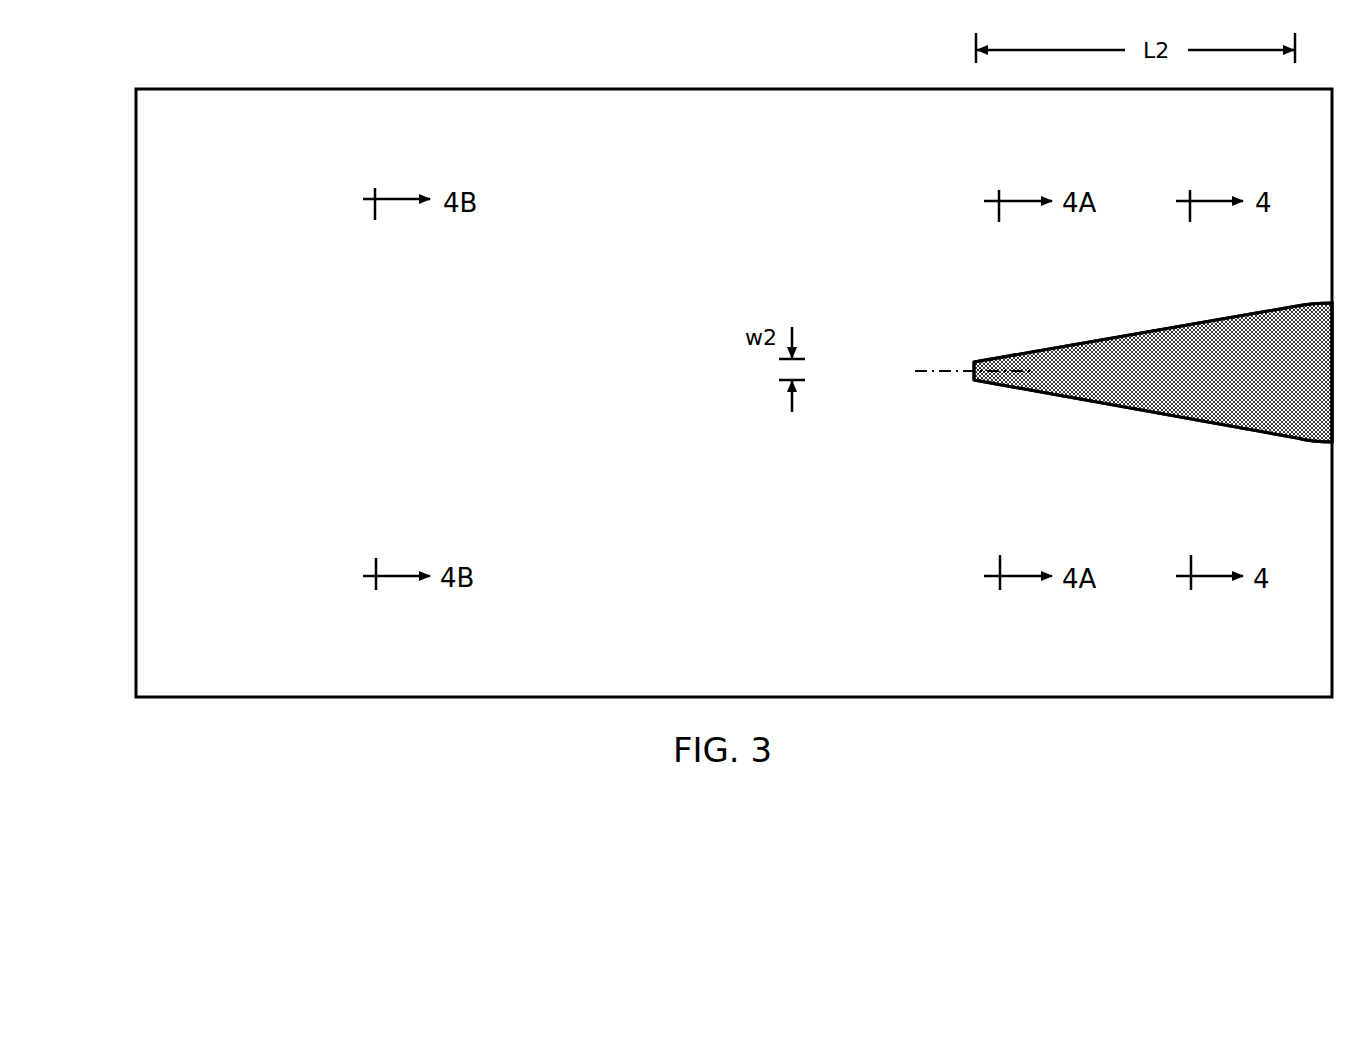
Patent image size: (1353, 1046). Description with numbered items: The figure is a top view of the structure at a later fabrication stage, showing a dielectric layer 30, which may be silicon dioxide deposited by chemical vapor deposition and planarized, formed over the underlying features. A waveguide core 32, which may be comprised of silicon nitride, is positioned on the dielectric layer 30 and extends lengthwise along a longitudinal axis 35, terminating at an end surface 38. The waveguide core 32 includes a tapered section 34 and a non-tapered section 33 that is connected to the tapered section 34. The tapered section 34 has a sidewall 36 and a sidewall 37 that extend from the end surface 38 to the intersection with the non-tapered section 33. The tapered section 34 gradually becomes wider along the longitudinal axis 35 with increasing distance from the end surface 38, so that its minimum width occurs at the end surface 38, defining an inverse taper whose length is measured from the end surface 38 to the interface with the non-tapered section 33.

The dielectric layer 30 is at (208, 627).
The waveguide core 32 is at (1060, 407).
The non-tapered section 33 is at (1313, 355).
The tapered section 34 is at (1115, 360).
The longitudinal axis 35 is at (950, 370).
The sidewall 36 is at (1200, 422).
The sidewall 37 is at (1182, 322).
The end surface 38 is at (973, 378).